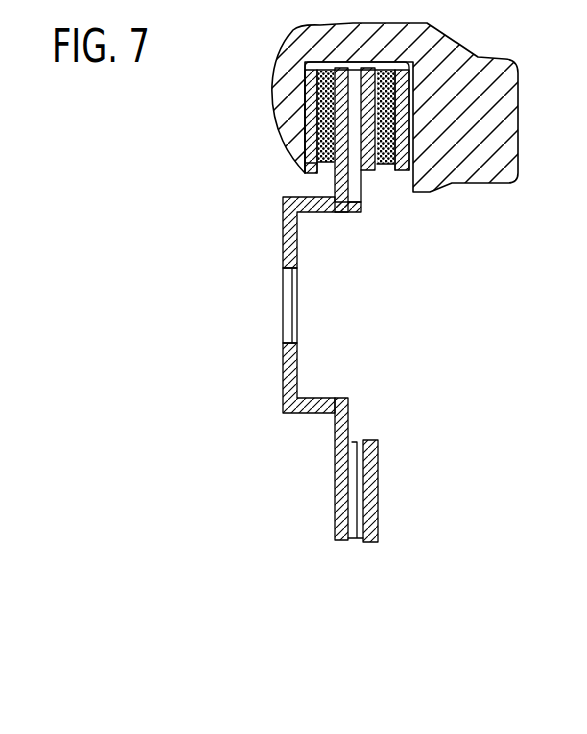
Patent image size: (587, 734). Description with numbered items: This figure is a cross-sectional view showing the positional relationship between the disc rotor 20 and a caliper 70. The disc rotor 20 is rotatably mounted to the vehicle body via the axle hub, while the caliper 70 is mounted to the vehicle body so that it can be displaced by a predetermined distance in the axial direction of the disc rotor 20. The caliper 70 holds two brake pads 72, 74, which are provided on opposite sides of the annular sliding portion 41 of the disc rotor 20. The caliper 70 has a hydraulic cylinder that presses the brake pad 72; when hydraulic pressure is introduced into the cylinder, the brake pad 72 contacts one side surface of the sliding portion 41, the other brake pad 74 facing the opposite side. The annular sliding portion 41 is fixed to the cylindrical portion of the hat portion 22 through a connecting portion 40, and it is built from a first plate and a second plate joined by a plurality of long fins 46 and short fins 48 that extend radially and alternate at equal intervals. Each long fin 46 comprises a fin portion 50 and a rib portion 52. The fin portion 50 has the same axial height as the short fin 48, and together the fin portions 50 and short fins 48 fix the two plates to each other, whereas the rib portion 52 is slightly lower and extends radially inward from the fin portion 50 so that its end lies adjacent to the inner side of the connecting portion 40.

The caliper 70 is at (469, 64).
The brake pad 74 is at (326, 172).
The brake pad 72 is at (403, 170).
The long fin 46 is at (398, 197).
The rib portion 52 is at (355, 152).
The fin portion 50 is at (377, 172).
The disc rotor 20 is at (283, 252).
The hat portion 22 is at (290, 389).
The connecting portion 40 is at (338, 428).
The short fin 48 is at (356, 452).
The annular sliding portion 41 is at (379, 509).